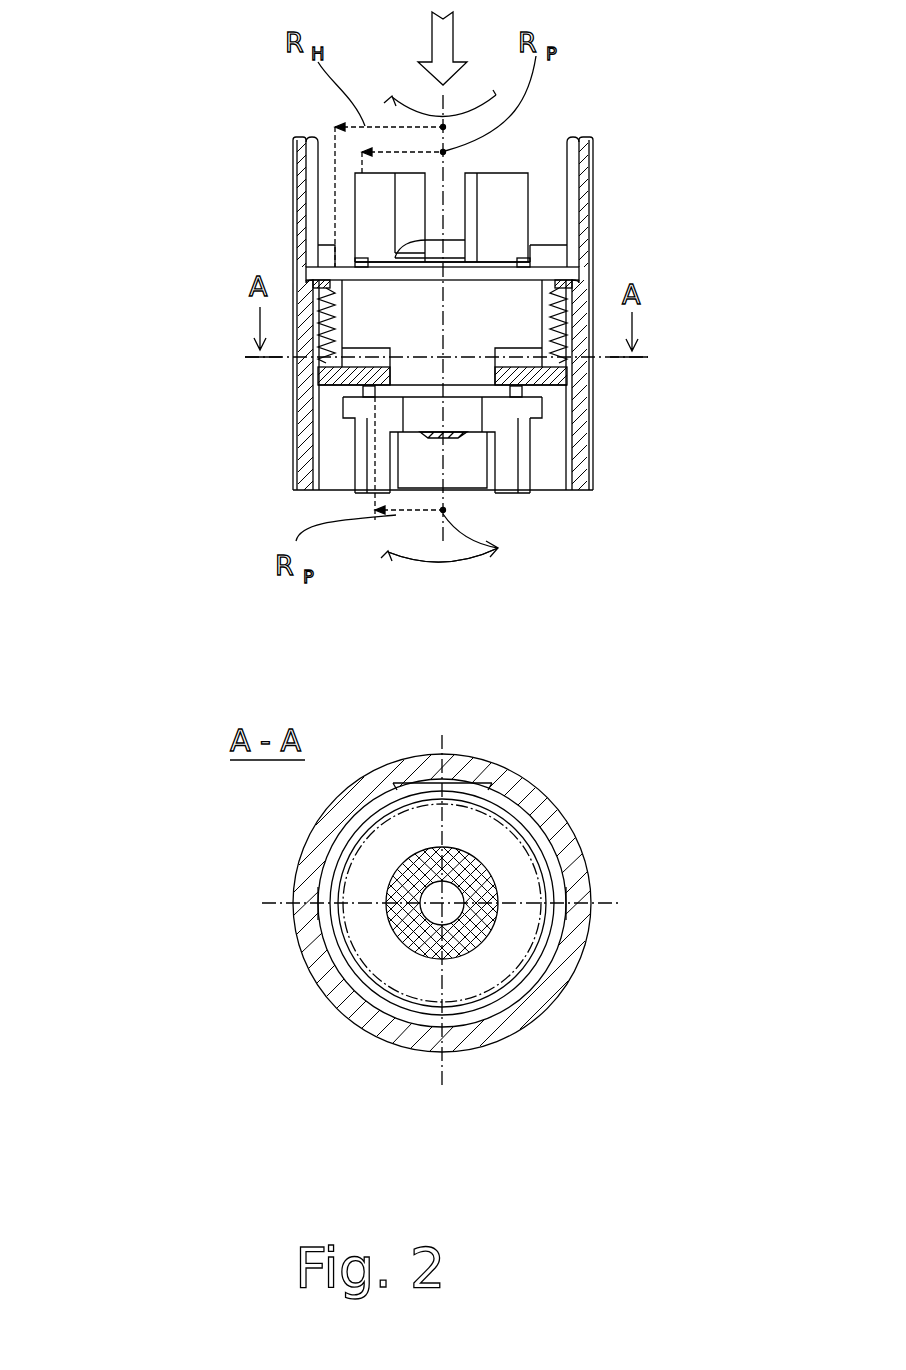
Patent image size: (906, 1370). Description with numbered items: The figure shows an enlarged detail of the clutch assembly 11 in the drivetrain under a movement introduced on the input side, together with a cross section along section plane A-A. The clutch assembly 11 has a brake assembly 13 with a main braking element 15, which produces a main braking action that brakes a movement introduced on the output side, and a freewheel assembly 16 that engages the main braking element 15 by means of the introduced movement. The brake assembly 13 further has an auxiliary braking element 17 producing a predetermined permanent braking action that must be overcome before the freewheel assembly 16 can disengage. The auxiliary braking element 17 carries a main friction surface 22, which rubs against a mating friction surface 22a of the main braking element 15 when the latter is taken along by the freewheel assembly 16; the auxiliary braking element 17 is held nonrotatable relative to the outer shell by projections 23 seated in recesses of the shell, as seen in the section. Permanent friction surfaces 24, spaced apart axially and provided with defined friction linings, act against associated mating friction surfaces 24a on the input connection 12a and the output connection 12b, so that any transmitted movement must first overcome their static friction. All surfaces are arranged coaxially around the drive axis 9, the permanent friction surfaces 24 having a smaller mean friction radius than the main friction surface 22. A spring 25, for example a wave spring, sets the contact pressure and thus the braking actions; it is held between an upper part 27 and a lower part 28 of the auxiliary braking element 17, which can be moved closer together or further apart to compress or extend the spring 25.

The drive axis 9 is at (499, 550).
The clutch assembly 11 is at (199, 85).
The input connection 12a is at (497, 198).
The output connection 12b is at (507, 493).
The brake assembly 13 is at (692, 326).
The main braking element 15 is at (535, 262).
The freewheel assembly 16 is at (518, 323).
The auxiliary braking element 17 is at (320, 366).
The main friction surface 22 is at (312, 278).
The mating friction surface 22a is at (333, 267).
The projections 23 is at (700, 1003).
The permanent friction surfaces 24 is at (347, 266).
The mating friction surfaces 24a is at (367, 270).
The spring 25 is at (567, 300).
The upper part 27 is at (553, 272).
The lower part 28 is at (323, 385).